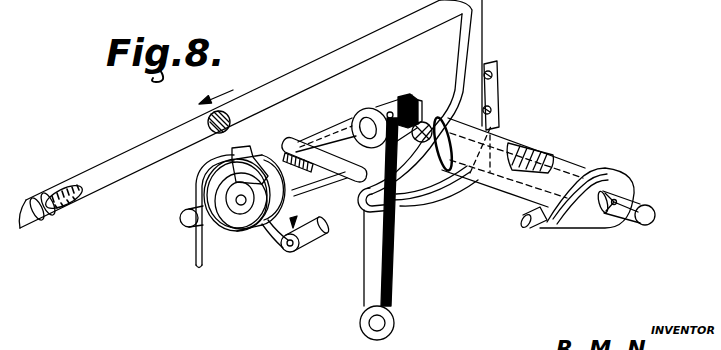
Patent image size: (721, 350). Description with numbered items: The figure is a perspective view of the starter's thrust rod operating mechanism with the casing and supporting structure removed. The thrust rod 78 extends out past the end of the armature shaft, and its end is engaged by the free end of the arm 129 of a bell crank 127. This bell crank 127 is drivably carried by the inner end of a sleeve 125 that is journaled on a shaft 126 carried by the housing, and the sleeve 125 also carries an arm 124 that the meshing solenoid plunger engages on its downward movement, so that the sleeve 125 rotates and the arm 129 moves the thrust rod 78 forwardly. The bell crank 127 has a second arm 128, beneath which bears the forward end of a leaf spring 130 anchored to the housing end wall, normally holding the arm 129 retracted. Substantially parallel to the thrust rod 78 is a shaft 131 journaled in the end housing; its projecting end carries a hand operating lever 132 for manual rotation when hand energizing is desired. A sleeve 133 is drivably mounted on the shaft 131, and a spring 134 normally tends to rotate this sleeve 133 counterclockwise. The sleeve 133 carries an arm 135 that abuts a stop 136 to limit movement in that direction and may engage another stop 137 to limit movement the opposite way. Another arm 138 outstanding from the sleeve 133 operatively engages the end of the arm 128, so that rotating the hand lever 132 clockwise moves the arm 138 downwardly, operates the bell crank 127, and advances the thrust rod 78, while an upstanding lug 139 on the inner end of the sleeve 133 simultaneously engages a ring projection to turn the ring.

The thrust rod 78 is at (297, 74).
The arm 124 is at (540, 225).
The sleeve 125 is at (574, 166).
The shaft 126 is at (642, 206).
The bell crank 127 is at (472, 198).
The arm 128 is at (363, 222).
The arm 129 is at (479, 36).
The leaf spring 130 is at (402, 198).
The shaft 131 is at (358, 118).
The hand operating lever 132 is at (386, 292).
The sleeve 133 is at (306, 146).
The spring 134 is at (196, 186).
The arm 135 is at (276, 250).
The stop 136 is at (302, 250).
The stop 137 is at (207, 222).
The arm 138 is at (345, 176).
The lug 139 is at (258, 138).